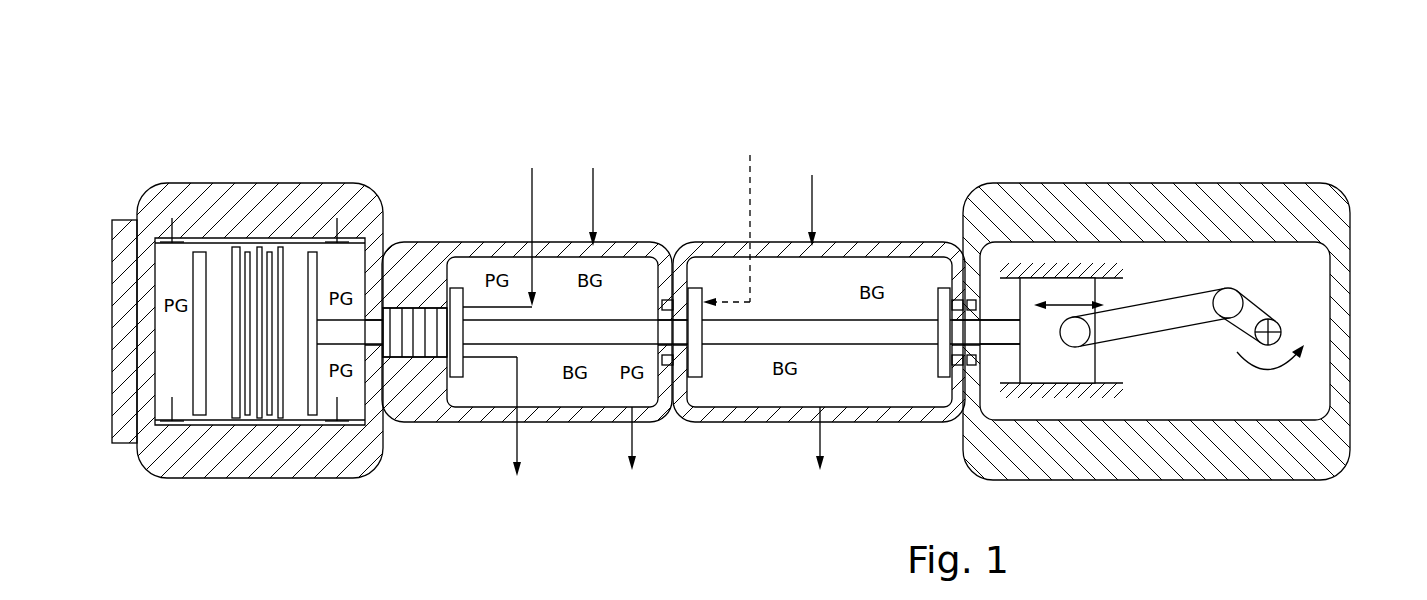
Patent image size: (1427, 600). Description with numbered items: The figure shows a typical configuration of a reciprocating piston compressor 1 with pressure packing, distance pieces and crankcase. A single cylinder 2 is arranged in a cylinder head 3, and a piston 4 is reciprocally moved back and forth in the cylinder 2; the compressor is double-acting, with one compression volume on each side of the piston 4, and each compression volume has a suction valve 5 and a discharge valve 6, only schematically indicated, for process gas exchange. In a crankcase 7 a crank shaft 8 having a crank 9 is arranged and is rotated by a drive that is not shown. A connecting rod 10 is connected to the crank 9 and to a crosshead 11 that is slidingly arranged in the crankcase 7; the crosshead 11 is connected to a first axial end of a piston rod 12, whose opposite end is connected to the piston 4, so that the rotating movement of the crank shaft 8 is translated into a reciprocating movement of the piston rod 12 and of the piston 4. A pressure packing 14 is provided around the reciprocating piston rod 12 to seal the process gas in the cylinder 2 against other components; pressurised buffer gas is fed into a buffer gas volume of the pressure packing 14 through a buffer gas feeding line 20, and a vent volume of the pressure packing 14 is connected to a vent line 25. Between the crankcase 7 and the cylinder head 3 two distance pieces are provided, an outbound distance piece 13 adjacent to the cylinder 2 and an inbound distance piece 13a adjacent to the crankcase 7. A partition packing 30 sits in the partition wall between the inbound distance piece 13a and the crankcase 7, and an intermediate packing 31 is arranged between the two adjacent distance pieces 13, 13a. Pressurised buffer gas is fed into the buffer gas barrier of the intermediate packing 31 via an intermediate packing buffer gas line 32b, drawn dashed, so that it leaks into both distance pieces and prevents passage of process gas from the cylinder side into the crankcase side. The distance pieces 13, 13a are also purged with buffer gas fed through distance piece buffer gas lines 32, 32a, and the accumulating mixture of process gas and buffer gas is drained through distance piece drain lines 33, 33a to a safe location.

The reciprocating piston compressor 1 is at (1107, 142).
The cylinder 2 is at (333, 273).
The cylinder head 3 is at (232, 202).
The piston 4 is at (219, 268).
The suction valve 5 is at (168, 216).
The discharge valve 6 is at (168, 406).
The crankcase 7 is at (1183, 212).
The crank shaft 8 is at (1278, 323).
The crank 9 is at (1252, 317).
The connecting rod 10 is at (1168, 313).
The crosshead 11 is at (1043, 343).
The piston rod 12 is at (880, 332).
The outbound distance piece 13 is at (627, 248).
The inbound distance piece 13a is at (900, 247).
The pressure packing 14 is at (433, 262).
The buffer gas feeding line 20 is at (532, 208).
The vent line 25 is at (514, 438).
The partition packing 30 is at (975, 327).
The intermediate packing 31 is at (683, 322).
The distance piece buffer gas line 32 is at (627, 178).
The distance piece buffer gas line 32a is at (812, 203).
The intermediate packing buffer gas line 32b is at (757, 197).
The distance piece drain line 33 is at (634, 433).
The distance piece drain line 33a is at (815, 432).